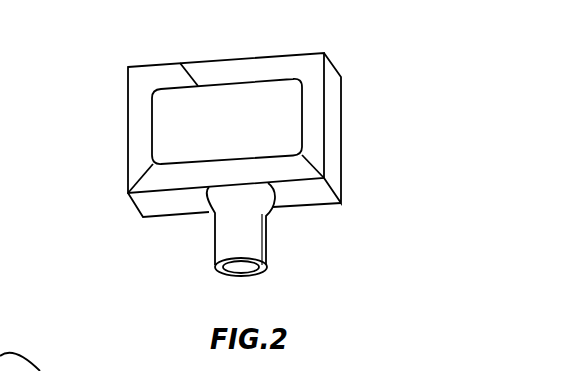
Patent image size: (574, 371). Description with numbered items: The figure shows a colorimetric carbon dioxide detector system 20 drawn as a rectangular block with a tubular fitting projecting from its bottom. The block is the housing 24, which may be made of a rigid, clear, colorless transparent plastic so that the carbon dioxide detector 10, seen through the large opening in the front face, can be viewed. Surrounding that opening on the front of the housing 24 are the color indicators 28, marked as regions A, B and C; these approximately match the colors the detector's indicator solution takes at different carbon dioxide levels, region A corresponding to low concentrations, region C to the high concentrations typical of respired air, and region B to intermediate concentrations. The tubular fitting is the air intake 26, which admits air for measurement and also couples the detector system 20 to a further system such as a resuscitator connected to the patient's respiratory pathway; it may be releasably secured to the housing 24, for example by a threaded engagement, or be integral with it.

The detector system 20 is at (143, 50).
The color indicators 28 is at (138, 88).
The carbon dioxide detector 10 is at (262, 136).
The housing 24 is at (308, 193).
The air intake 26 is at (238, 271).